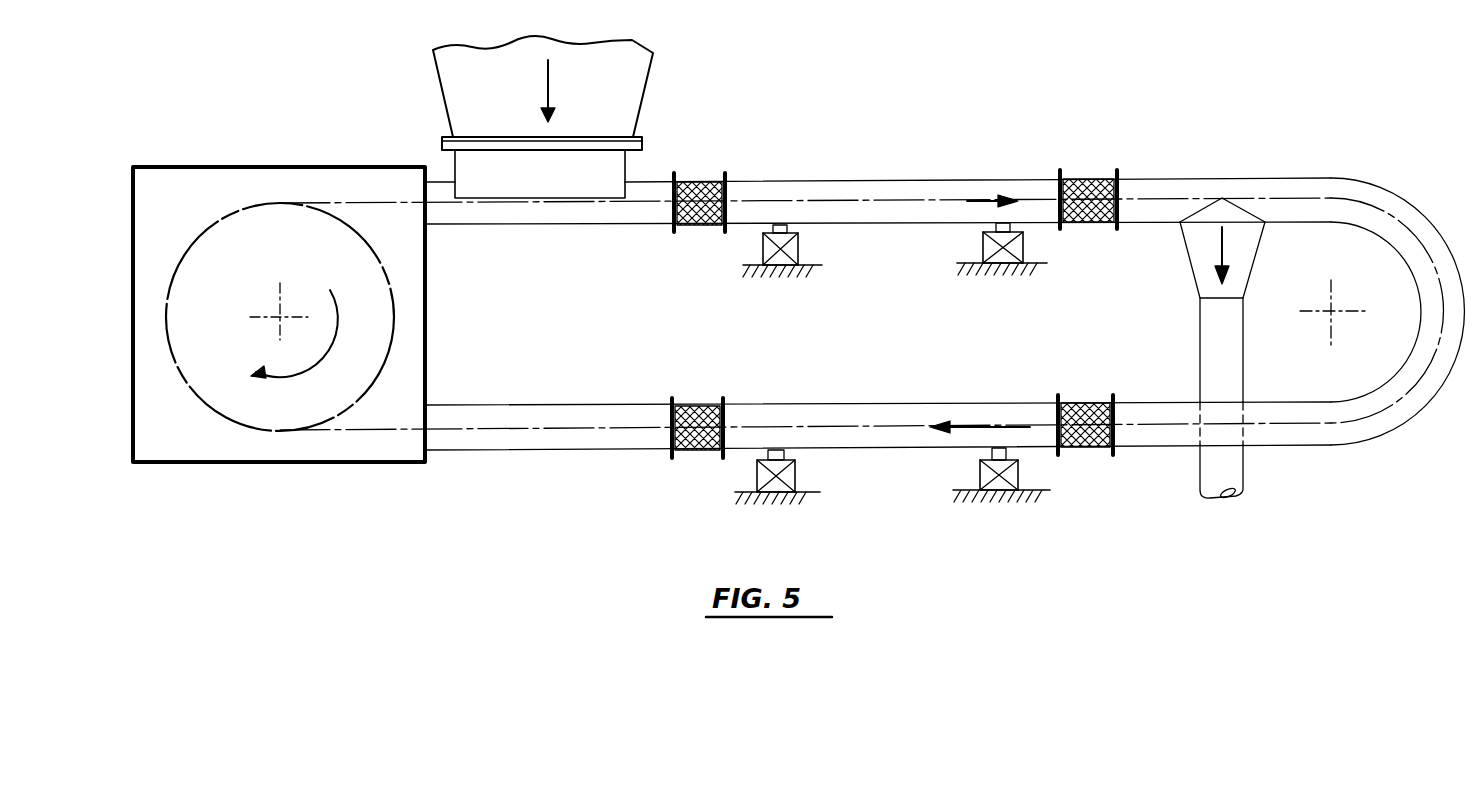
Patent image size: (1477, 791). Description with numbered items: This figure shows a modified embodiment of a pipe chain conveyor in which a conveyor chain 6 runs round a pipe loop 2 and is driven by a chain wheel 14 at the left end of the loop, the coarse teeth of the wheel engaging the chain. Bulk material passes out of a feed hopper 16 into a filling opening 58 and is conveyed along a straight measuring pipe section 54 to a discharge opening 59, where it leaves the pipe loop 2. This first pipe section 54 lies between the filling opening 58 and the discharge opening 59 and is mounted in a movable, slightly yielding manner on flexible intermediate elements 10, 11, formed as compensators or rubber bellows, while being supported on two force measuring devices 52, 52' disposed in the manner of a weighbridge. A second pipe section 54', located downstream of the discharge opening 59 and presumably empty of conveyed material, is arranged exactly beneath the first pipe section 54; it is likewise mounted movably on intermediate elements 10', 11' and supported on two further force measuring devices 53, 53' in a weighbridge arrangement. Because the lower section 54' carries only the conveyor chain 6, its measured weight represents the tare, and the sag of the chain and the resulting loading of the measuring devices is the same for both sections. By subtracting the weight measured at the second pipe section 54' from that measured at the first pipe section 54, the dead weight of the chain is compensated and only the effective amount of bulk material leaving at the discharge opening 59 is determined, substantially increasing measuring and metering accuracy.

The pipe loop 2 is at (1178, 152).
The conveyor chain 6 is at (330, 202).
The chain wheel 14 is at (352, 232).
The feed hopper 16 is at (437, 77).
The filling opening 58 is at (607, 168).
The flexible intermediate element 10 is at (718, 181).
The intermediate element 10' is at (710, 404).
The flexible intermediate element 11 is at (1098, 178).
The intermediate element 11' is at (1094, 401).
The straight measuring pipe section 54 is at (805, 177).
The second pipe section 54' is at (805, 400).
The force measuring device 52 is at (758, 251).
The force measuring device 52' is at (1024, 249).
The force measuring device 53 is at (754, 477).
The force measuring device 53' is at (1025, 475).
The discharge opening 59 is at (1230, 215).